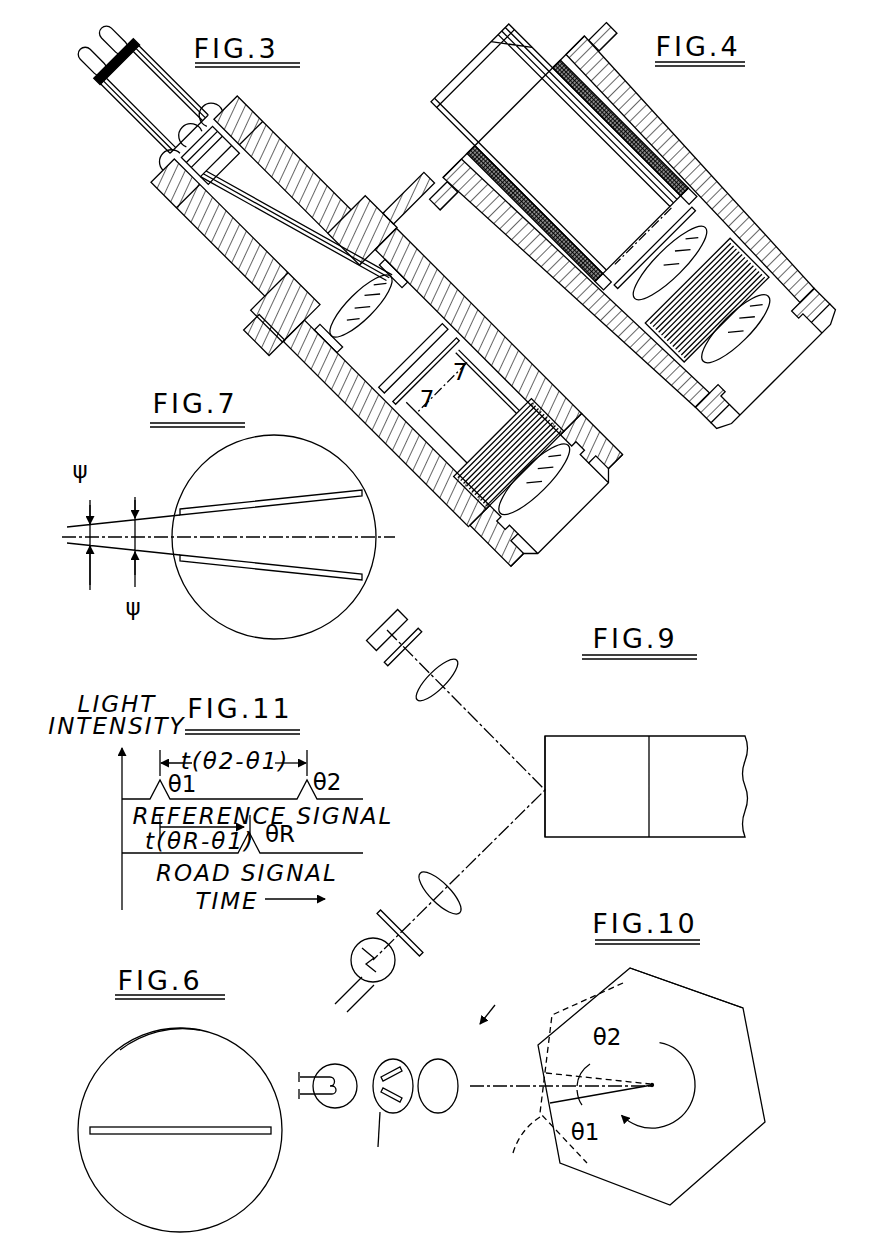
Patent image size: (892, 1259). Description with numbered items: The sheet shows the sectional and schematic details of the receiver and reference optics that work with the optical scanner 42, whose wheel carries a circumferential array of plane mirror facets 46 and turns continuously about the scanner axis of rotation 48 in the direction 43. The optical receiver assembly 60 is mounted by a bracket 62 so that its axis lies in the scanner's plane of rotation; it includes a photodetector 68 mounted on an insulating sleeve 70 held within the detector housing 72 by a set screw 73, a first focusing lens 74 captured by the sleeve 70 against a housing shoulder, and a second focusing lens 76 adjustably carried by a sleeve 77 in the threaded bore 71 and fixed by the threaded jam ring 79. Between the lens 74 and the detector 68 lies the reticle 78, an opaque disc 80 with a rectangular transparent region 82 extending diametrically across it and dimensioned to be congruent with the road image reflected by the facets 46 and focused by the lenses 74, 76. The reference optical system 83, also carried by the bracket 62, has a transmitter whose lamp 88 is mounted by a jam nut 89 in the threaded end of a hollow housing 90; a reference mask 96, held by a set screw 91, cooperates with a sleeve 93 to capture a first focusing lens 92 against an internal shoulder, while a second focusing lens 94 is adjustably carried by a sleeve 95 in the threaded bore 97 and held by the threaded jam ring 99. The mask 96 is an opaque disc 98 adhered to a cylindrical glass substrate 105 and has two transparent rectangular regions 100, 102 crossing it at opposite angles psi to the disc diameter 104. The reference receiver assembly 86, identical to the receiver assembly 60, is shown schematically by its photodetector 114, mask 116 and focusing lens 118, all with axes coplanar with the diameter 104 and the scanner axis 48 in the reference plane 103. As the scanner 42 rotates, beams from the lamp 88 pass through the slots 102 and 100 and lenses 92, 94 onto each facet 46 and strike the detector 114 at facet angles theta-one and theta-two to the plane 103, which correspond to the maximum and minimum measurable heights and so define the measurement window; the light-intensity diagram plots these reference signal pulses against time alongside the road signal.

In FIG. 9, the optical scanner 42 is at (690, 731).
In FIG. 10, the optical scanner 42 is at (692, 1193).
In FIG. 10, the direction of rotation 43 is at (678, 1118).
In FIG. 9, the mirror facet 46 is at (545, 760).
In FIG. 10, the mirror facet 46 is at (743, 1006).
In FIG. 10, the scanner axis of rotation 48 is at (654, 1081).
In FIG. 4, the optical receiver assembly 60 is at (635, 233).
In FIG. 3, the bracket 62 is at (415, 180).
In FIG. 4, the bracket 62 is at (612, 47).
In FIG. 4, the photodetector 68 is at (660, 195).
In FIG. 4, the insulating sleeve 70 is at (535, 62).
In FIG. 4, the threaded bore 71 is at (748, 405).
In FIG. 4, the detector housing 72 is at (598, 105).
In FIG. 4, the set screw 73 is at (615, 130).
In FIG. 4, the first focusing lens 74 is at (707, 257).
In FIG. 4, the second focusing lens 76 is at (745, 312).
In FIG. 4, the sleeve 77 is at (735, 402).
In FIG. 4, the reticle 78 is at (690, 228).
In FIG. 6, the reticle 78 is at (260, 1060).
In FIG. 4, the threaded jam ring 79 is at (772, 340).
In FIG. 6, the opaque disc 80 is at (122, 1068).
In FIG. 6, the rectangular transparent region 82 is at (184, 1136).
In FIG. 9, the reference optical system 83 is at (498, 651).
In FIG. 10, the reference optical system 83 is at (498, 1001).
In FIG. 9, the reference receiver assembly 86 is at (412, 620).
In FIG. 3, the lamp 88 is at (162, 120).
In FIG. 9, the lamp 88 is at (356, 950).
In FIG. 10, the lamp 88 is at (340, 1110).
In FIG. 3, the jam nut 89 is at (222, 113).
In FIG. 3, the hollow housing 90 is at (359, 304).
In FIG. 3, the set screw 91 is at (386, 423).
In FIG. 3, the first focusing lens 92 is at (383, 265).
In FIG. 9, the first focusing lens 92 is at (440, 878).
In FIG. 10, the first focusing lens 92 is at (451, 1068).
In FIG. 3, the sleeve 93 is at (385, 292).
In FIG. 3, the second focusing lens 94 is at (550, 463).
In FIG. 9, the second focusing lens 94 is at (435, 880).
In FIG. 10, the second focusing lens 94 is at (445, 1062).
In FIG. 3, the sleeve 95 is at (483, 530).
In FIG. 3, the reference mask 96 is at (462, 338).
In FIG. 9, the reference mask 96 is at (388, 912).
In FIG. 10, the reference mask 96 is at (386, 1086).
In FIG. 3, the threaded bore 97 is at (620, 490).
In FIG. 9, the opaque disc 98 is at (424, 920).
In FIG. 10, the opaque disc 98 is at (386, 1100).
In FIG. 3, the threaded jam ring 99 is at (558, 546).
In FIG. 7, the transparent rectangular region 100 is at (270, 507).
In FIG. 10, the transparent rectangular region 100 is at (385, 1072).
In FIG. 7, the transparent rectangular region 102 is at (258, 568).
In FIG. 10, the transparent rectangular region 102 is at (392, 1110).
In FIG. 10, the reference plane 103 is at (488, 1083).
In FIG. 7, the disc diameter 104 is at (348, 538).
In FIG. 3, the cylindrical glass substrate 105 is at (443, 333).
In FIG. 9, the reference receiver photodetector 114 is at (402, 625).
In FIG. 9, the reference receiver mask 116 is at (458, 672).
In FIG. 9, the reference receiver focusing lens 118 is at (420, 642).